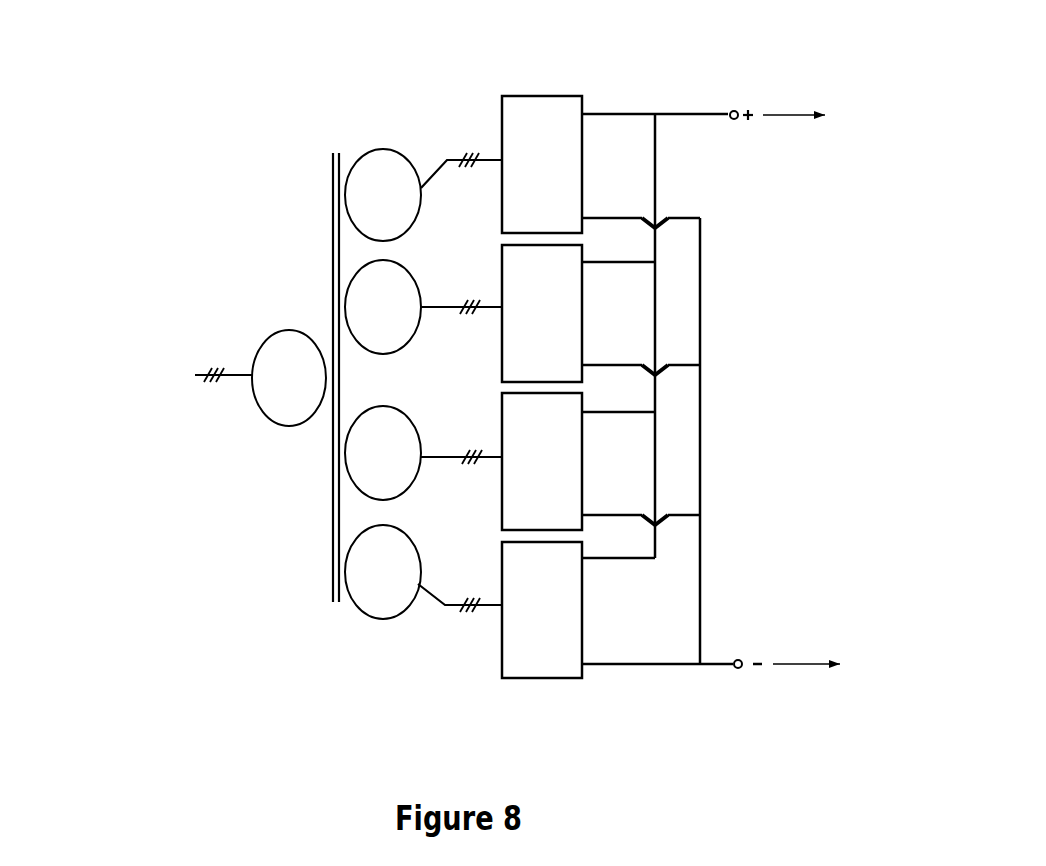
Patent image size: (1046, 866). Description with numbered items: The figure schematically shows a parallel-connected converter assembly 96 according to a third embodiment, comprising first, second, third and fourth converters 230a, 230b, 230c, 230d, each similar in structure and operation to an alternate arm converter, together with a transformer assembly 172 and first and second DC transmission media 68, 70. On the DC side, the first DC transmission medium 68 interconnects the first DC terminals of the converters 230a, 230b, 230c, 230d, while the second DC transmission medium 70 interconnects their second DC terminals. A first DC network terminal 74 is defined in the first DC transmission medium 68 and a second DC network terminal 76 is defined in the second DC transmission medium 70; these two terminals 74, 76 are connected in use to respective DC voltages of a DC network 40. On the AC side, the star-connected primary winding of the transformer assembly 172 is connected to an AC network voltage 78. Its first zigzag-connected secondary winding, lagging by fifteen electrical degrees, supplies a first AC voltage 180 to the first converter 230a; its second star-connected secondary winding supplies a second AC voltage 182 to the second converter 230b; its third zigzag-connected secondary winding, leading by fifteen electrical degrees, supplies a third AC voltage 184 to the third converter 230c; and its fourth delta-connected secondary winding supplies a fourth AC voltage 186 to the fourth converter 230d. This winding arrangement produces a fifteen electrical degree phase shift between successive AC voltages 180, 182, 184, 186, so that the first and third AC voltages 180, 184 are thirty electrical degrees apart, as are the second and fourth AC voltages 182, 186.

The parallel-connected converter assembly 96 is at (232, 157).
The transformer assembly 172 is at (310, 313).
The AC network voltage 78 is at (173, 375).
The first AC voltage 180 is at (423, 179).
The second AC voltage 182 is at (423, 302).
The third AC voltage 184 is at (423, 441).
The fourth AC voltage 186 is at (423, 564).
The first converter 230a is at (572, 166).
The second converter 230b is at (572, 316).
The third converter 230c is at (572, 471).
The fourth converter 230d is at (572, 623).
The first DC transmission medium 68 is at (690, 108).
The first DC network terminal 74 is at (740, 107).
The second DC transmission medium 70 is at (712, 673).
The second DC network terminal 76 is at (745, 675).
The DC network 40 is at (823, 390).